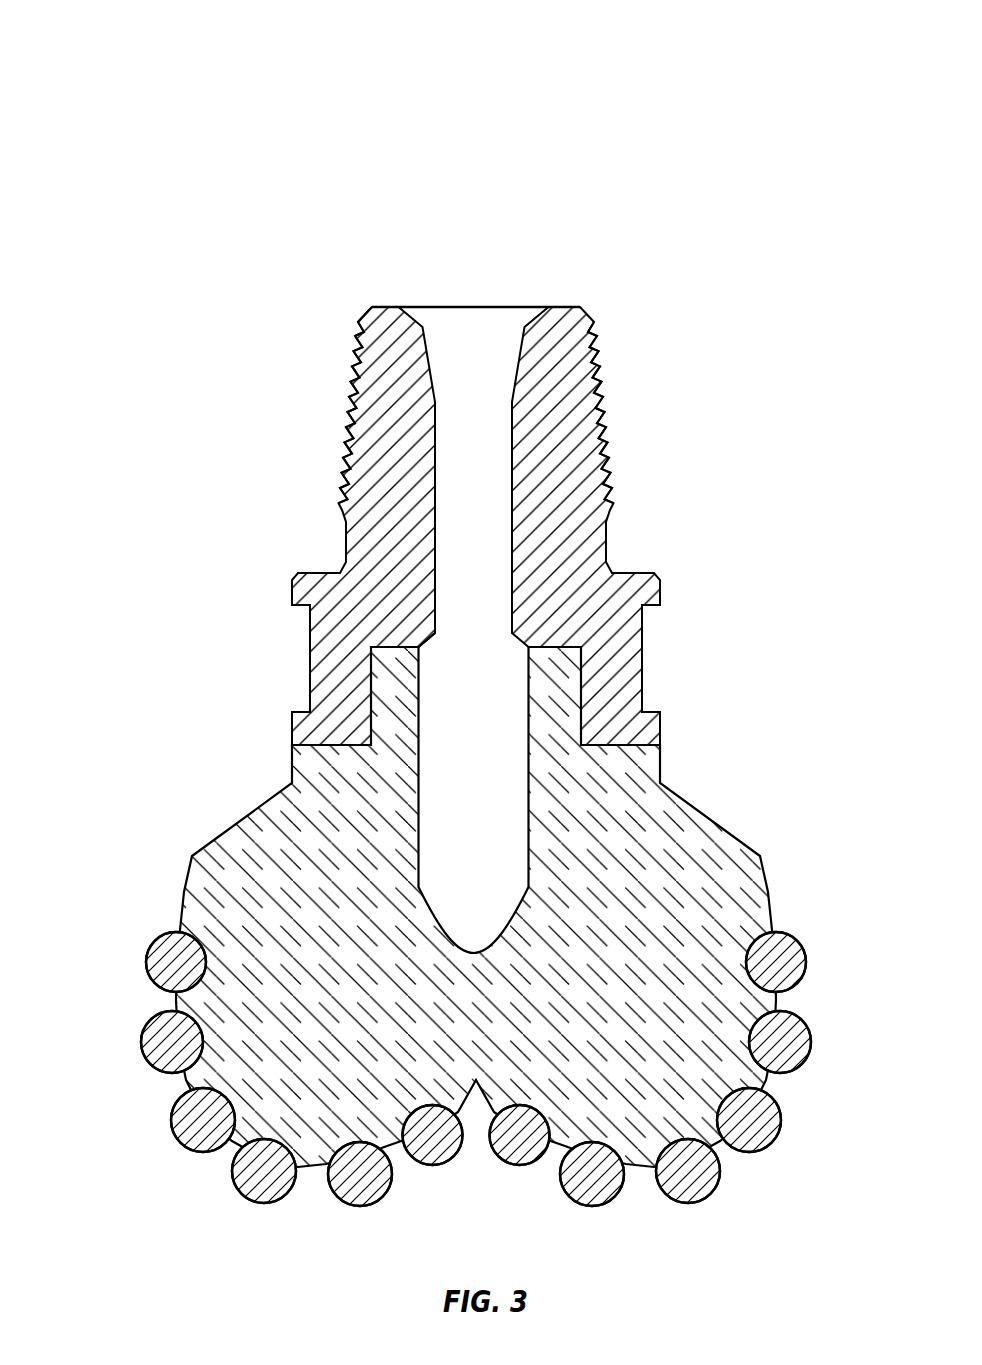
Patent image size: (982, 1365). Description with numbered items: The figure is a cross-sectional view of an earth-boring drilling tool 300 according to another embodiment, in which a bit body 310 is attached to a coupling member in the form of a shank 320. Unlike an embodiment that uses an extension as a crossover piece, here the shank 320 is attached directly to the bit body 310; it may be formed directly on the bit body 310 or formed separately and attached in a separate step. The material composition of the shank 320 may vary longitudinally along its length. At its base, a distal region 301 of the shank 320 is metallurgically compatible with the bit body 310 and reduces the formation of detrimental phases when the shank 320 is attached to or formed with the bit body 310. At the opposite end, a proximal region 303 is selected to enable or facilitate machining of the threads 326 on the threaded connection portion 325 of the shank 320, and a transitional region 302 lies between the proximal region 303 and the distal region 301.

The earth-boring drilling tool 300 is at (140, 98).
The distal region 301 is at (335, 722).
The transitional region 302 is at (352, 584).
The proximal region 303 is at (585, 416).
The bit body 310 is at (710, 950).
The shank 320 is at (410, 532).
The threaded connection portion 325 is at (382, 338).
The threads 326 is at (352, 380).